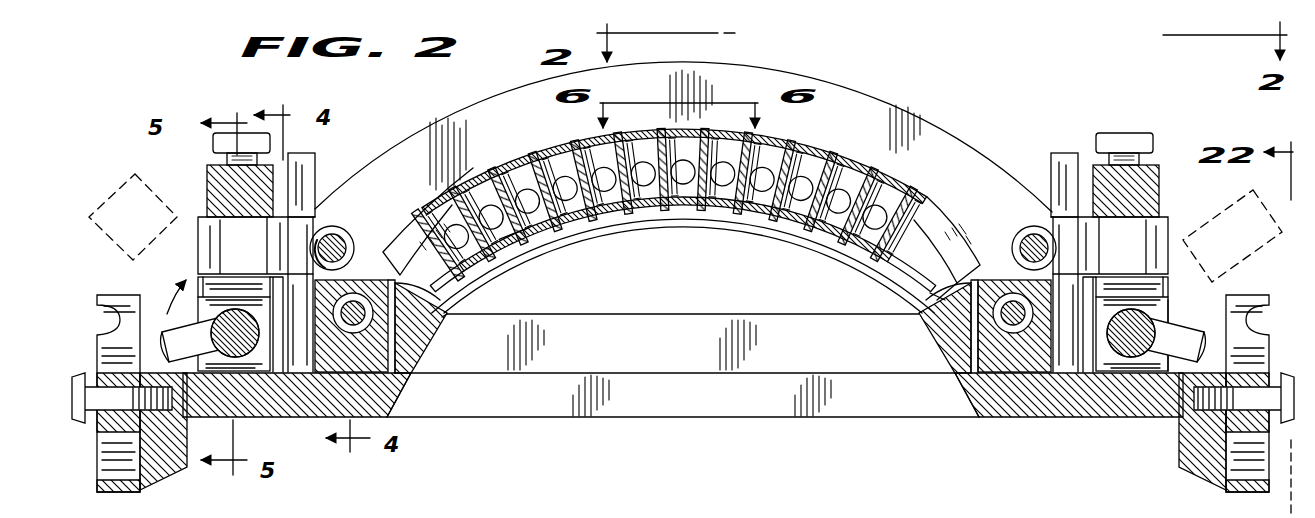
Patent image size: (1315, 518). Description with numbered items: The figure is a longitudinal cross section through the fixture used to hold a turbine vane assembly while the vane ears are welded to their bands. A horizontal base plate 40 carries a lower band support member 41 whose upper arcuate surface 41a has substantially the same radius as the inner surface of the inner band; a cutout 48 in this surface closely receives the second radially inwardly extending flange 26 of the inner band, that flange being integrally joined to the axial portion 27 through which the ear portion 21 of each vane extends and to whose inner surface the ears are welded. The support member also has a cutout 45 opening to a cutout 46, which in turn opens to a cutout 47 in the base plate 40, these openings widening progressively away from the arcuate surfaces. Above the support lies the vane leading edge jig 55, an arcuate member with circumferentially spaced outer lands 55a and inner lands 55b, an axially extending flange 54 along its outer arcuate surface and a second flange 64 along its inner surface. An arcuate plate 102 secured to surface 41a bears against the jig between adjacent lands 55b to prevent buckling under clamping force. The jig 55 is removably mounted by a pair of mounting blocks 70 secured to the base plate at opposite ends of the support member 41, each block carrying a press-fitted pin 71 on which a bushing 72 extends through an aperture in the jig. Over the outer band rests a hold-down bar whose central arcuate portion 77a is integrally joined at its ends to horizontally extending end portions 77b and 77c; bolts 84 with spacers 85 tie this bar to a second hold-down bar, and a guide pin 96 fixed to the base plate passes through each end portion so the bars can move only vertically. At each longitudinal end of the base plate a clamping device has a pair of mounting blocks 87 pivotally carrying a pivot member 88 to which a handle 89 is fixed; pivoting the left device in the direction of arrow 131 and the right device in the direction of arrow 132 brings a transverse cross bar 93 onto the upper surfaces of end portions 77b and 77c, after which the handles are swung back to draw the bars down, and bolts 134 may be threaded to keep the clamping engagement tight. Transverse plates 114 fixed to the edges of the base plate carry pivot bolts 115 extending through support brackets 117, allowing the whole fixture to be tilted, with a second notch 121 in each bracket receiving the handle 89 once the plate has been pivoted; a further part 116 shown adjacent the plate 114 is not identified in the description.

The ear portion 21 is at (898, 176).
The second radially inwardly extending flange 26 is at (583, 230).
The axial portion 27 is at (655, 207).
The base plate 40 is at (1048, 418).
The lower band support member 41 is at (668, 351).
The upper arcuate surface 41a is at (438, 320).
The cutout 45 is at (920, 300).
The cutout 46 is at (946, 333).
The cutout 47 is at (958, 394).
The cutout 48 is at (467, 288).
The flange 54 is at (408, 230).
The vane leading edge jig 55 is at (944, 226).
The outer lands 55a is at (490, 172).
The lands 55b is at (518, 233).
The second flange 64 is at (863, 270).
The mounting block 70 is at (388, 360).
The pin 71 is at (947, 286).
The bushing 72 is at (976, 341).
The central arcuate portion 77a is at (853, 98).
The end portion 77b is at (200, 236).
The end portion 77c is at (1166, 228).
The bolt 84 is at (332, 240).
The spacer 85 is at (353, 238).
The mounting block 87 is at (1128, 278).
The pivot member 88 is at (255, 358).
The handle 89 is at (1170, 325).
The transverse cross bar 93 is at (101, 207).
The guide pin 96 is at (307, 168).
The arcuate plate 102 is at (690, 207).
The transverse plate 114 is at (170, 462).
The pivot bolt 115 is at (82, 373).
The end plate 116 is at (1178, 451).
The support bracket 117 is at (110, 497).
The second notch 121 is at (1230, 470).
The arrow 131 is at (160, 300).
The arrow 132 is at (1232, 260).
The bolt 134 is at (1128, 140).